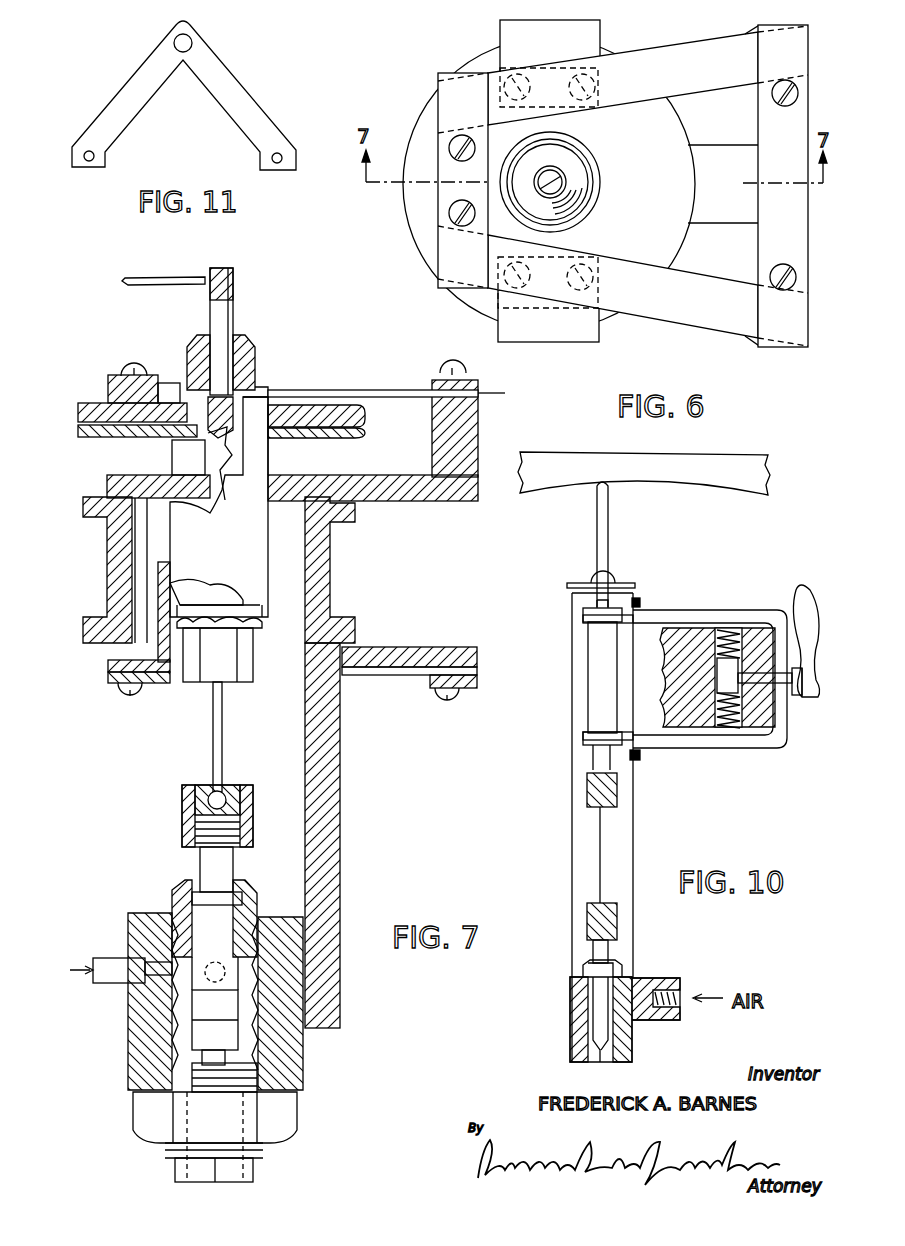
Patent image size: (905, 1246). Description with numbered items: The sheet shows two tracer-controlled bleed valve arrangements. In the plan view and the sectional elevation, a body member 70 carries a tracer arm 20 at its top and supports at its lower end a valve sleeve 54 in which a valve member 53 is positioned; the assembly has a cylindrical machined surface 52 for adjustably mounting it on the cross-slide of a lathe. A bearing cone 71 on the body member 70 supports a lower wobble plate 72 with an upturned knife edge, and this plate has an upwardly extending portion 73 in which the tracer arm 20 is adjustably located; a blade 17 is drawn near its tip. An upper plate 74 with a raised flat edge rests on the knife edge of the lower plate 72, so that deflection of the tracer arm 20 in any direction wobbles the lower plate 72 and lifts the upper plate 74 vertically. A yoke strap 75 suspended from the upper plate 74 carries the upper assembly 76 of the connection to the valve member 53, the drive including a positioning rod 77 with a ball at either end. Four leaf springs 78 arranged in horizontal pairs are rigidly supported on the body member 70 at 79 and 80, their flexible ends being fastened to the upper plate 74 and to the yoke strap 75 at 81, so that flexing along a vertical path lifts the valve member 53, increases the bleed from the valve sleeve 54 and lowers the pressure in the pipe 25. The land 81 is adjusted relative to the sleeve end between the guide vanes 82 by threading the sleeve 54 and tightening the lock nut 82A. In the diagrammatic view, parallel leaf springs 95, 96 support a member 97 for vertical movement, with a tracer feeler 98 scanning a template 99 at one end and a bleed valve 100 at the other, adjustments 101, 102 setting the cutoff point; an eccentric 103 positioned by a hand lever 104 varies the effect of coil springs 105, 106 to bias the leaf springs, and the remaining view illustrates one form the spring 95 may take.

In FIG. 7, the cutting blade 17 is at (160, 277).
In FIG. 6, the tracer arm 20 is at (543, 172).
In FIG. 7, the tracer arm 20 is at (233, 300).
In FIG. 7, the pipe 25 is at (113, 957).
In FIG. 7, the machined surface 52 is at (332, 565).
In FIG. 7, the valve member 53 is at (200, 862).
In FIG. 7, the valve sleeve 54 is at (172, 900).
In FIG. 7, the body member 70 is at (340, 790).
In FIG. 7, the bearing cone 71 is at (203, 460).
In FIG. 7, the lower wobble plate 72 is at (328, 437).
In FIG. 7, the upwardly extending portion 73 is at (255, 347).
In FIG. 6, the upper plate 74 is at (650, 197).
In FIG. 7, the upper plate 74 is at (95, 403).
In FIG. 6, the yoke strap 75 is at (498, 32).
In FIG. 7, the yoke strap 75 is at (235, 559).
In FIG. 7, the upper assembly 76 is at (219, 649).
In FIG. 7, the positioning rod 77 is at (222, 740).
In FIG. 6, the leaf springs 78 is at (625, 185).
In FIG. 7, the leaf springs 78 is at (337, 390).
In FIG. 7, the spring support 79 is at (505, 395).
In FIG. 7, the spring support 80 is at (477, 675).
In FIG. 7, the land 81 is at (108, 670).
In FIG. 7, the guide vanes 82 is at (243, 883).
In FIG. 7, the lock nut 82A is at (297, 1123).
In FIG. 11, the leaf spring 95 is at (140, 114).
In FIG. 10, the leaf spring 95 is at (663, 620).
In FIG. 10, the leaf spring 96 is at (660, 732).
In FIG. 10, the member 97 is at (588, 698).
In FIG. 10, the tracer feeler 98 is at (608, 487).
In FIG. 10, the template 99 is at (693, 487).
In FIG. 10, the bleed valve 100 is at (563, 1024).
In FIG. 10, the adjustment 101 is at (583, 615).
In FIG. 10, the adjustment 102 is at (583, 737).
In FIG. 10, the eccentric 103 is at (718, 670).
In FIG. 10, the hand lever 104 is at (810, 590).
In FIG. 10, the coil spring 105 is at (717, 640).
In FIG. 10, the coil spring 106 is at (718, 707).